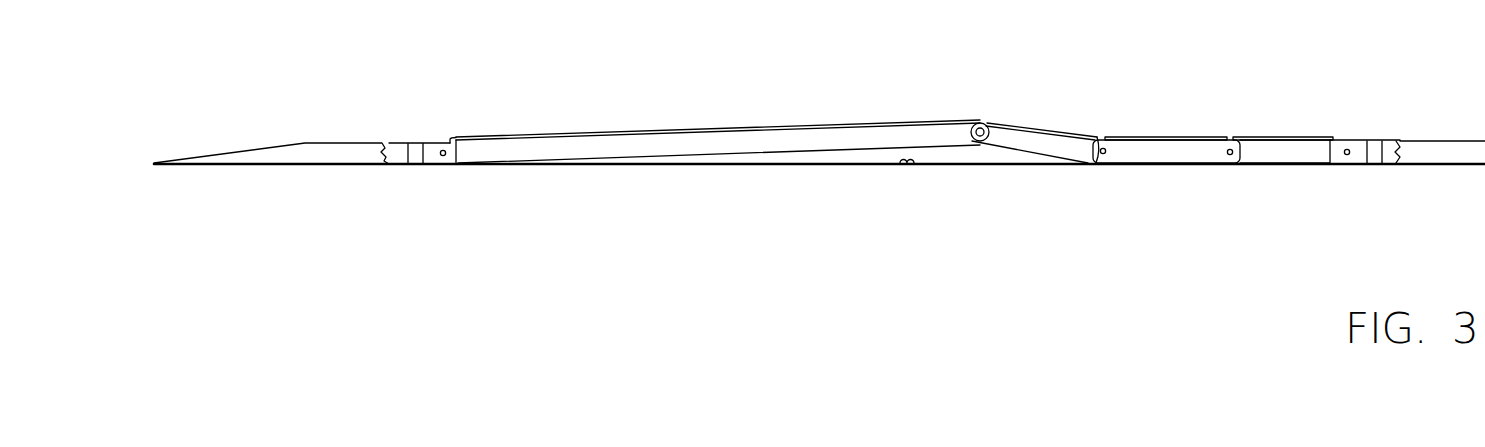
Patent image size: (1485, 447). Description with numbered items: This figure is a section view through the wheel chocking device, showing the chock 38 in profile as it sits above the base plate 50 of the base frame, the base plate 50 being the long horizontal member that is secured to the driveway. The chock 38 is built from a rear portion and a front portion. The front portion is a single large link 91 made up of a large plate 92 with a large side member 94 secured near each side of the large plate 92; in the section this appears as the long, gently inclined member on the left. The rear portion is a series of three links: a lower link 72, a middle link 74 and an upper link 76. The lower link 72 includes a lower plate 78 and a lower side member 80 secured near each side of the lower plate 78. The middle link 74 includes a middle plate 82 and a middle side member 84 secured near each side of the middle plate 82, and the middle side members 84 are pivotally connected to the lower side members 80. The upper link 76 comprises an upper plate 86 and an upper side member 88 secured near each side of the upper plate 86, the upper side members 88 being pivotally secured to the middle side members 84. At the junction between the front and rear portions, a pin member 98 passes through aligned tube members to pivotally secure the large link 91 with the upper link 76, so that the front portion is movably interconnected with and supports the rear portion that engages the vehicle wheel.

The chock 38 is at (740, 115).
The base plate 50 is at (858, 166).
The lower link 72 is at (1312, 132).
The middle link 74 is at (1179, 130).
The upper link 76 is at (1056, 129).
The lower plate 78 is at (1333, 134).
The lower side member 80 is at (1304, 149).
The middle plate 82 is at (1214, 134).
The middle side member 84 is at (1178, 149).
The upper plate 86 is at (1088, 131).
The upper side member 88 is at (1046, 143).
The large link 91 is at (753, 124).
The large plate 92 is at (848, 121).
The large side member 94 is at (733, 142).
The pin member 98 is at (985, 122).